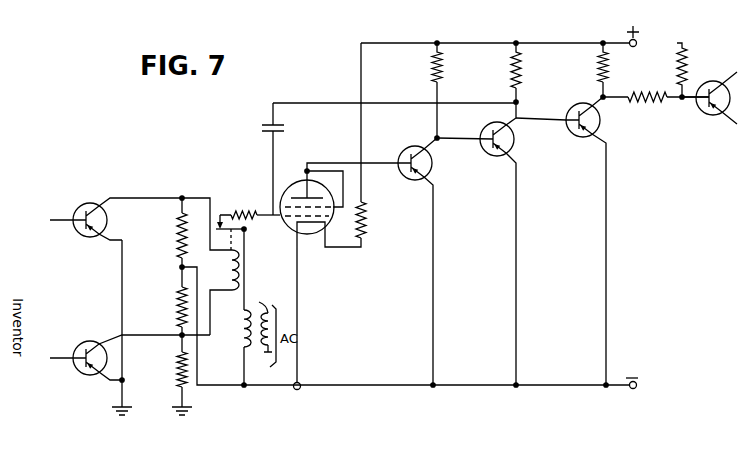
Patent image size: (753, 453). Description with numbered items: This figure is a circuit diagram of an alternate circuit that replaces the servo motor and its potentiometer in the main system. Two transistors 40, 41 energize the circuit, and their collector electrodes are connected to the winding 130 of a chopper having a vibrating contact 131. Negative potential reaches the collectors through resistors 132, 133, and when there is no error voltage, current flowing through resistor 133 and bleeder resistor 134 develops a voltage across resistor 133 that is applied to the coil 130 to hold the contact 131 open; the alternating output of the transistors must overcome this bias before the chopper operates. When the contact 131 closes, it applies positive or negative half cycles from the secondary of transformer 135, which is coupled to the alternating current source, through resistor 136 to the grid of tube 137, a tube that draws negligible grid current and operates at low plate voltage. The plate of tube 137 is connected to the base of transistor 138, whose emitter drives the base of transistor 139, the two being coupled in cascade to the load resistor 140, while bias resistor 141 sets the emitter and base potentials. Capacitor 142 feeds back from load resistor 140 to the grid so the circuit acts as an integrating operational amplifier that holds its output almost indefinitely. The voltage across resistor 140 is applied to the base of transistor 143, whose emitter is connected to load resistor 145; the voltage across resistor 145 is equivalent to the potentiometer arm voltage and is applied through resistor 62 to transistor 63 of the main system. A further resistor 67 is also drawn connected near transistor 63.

The transistor 40 is at (83, 204).
The transistor 41 is at (86, 342).
The resistor 62 is at (657, 88).
The transistor 63 is at (701, 106).
The resistor 67 is at (688, 78).
The winding of chopper 130 is at (230, 273).
The vibrating contact 131 is at (220, 213).
The resistor 132 is at (179, 232).
The resistor 133 is at (179, 306).
The bleeder resistor 134 is at (179, 369).
The transformer 135 is at (257, 306).
The resistor 136 is at (243, 211).
The tube 137 is at (301, 189).
The transistor 138 is at (421, 145).
The transistor 139 is at (492, 127).
The load resistor 140 is at (510, 79).
The bias resistor 141 is at (429, 78).
The capacitor 142 is at (284, 132).
The transistor 143 is at (588, 104).
The load resistor 145 is at (598, 78).